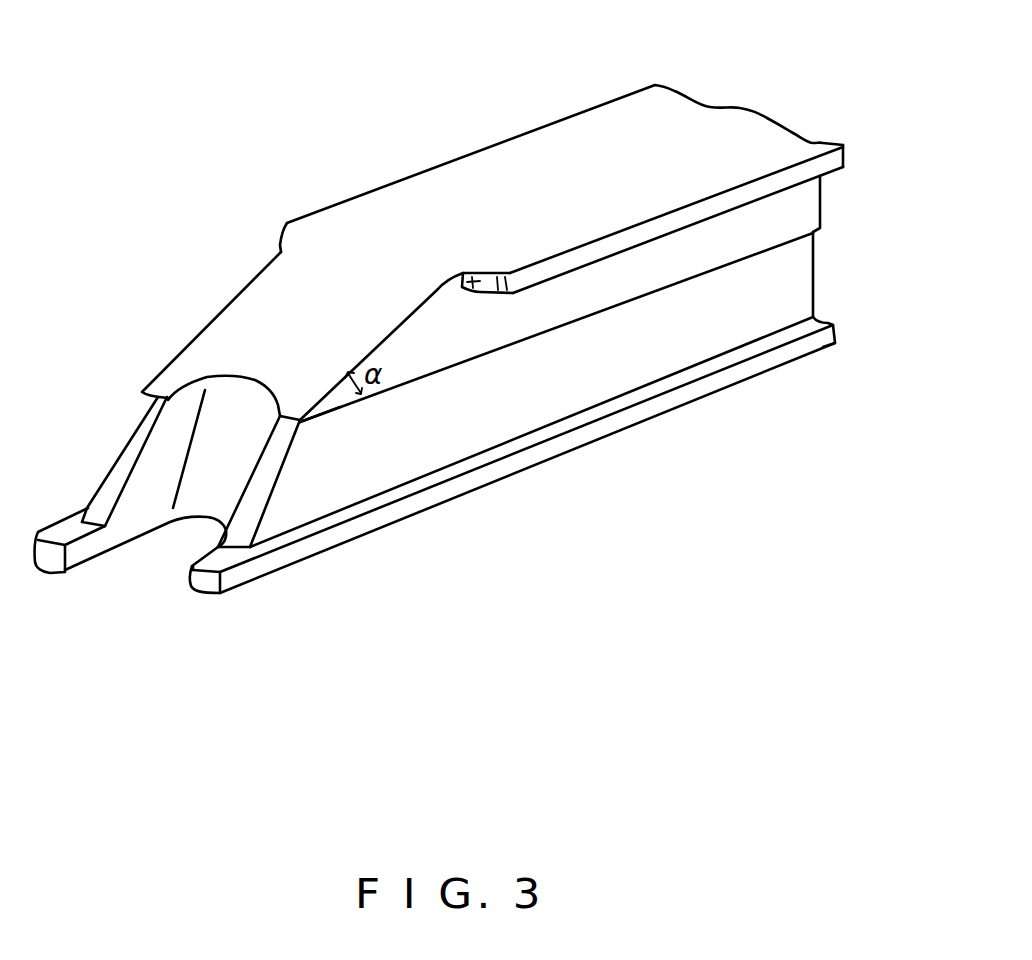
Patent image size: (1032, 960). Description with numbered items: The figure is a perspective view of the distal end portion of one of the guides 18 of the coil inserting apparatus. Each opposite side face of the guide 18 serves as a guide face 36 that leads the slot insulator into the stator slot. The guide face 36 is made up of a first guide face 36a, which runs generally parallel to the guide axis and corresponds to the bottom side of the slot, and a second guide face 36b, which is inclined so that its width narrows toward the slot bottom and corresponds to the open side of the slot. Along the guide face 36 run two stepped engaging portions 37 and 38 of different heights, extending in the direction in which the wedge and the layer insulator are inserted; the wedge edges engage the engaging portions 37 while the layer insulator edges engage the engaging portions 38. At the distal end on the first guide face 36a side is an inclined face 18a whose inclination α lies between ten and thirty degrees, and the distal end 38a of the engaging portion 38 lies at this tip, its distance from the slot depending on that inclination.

The guide 18 is at (567, 112).
The inclined face 18a is at (235, 330).
The guide face 36 is at (798, 265).
The first guide face 36a is at (803, 202).
The second guide face 36b is at (728, 328).
The engaging portion 37 is at (390, 390).
The engaging portion 38 is at (540, 282).
The distal end of engaging portion 38a is at (460, 273).